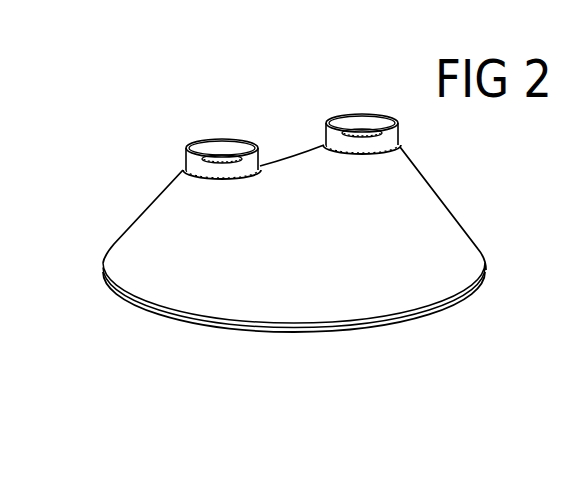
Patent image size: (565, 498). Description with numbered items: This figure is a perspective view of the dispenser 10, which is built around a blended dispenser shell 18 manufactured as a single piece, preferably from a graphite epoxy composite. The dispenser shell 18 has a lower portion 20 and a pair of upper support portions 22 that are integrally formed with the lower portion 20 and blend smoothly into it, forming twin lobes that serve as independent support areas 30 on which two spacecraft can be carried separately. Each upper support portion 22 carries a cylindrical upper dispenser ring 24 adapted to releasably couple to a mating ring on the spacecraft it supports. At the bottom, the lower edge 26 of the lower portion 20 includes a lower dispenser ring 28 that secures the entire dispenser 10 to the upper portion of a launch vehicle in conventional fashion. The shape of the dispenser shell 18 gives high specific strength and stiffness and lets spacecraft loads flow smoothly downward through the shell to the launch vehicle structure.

The dispenser 10 is at (168, 110).
The blended dispenser shell 18 is at (451, 210).
The lower portion 20 is at (133, 250).
The upper support portions 22 is at (409, 162).
The cylindrical upper dispenser ring 24 is at (330, 112).
The lower edge 26 is at (138, 290).
The lower dispenser ring 28 is at (320, 333).
The independent support areas 30 is at (213, 147).